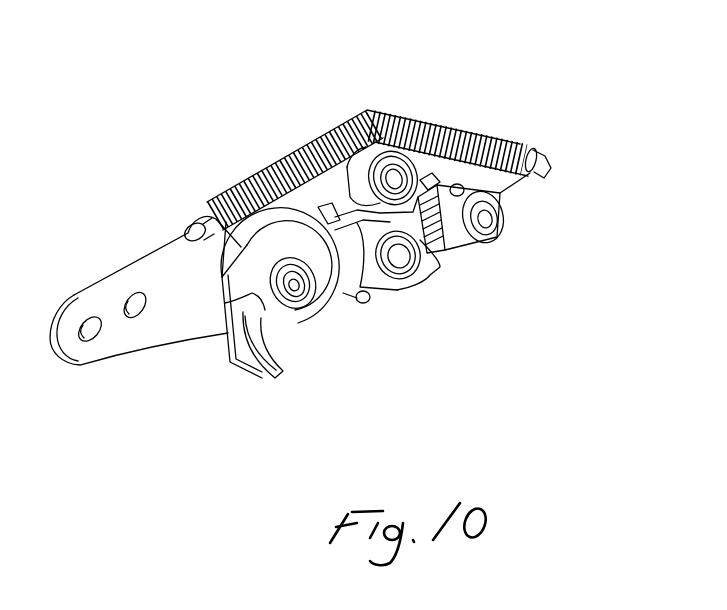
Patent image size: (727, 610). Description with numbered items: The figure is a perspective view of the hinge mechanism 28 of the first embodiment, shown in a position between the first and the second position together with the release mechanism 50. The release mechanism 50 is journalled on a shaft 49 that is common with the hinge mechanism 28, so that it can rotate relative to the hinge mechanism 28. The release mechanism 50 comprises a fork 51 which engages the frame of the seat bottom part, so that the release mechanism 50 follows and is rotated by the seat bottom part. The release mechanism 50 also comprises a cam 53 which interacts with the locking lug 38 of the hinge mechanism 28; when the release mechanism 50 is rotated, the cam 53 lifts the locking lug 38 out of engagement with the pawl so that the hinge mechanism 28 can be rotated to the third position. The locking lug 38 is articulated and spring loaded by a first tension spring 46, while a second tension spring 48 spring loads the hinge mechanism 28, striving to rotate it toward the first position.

The hinge mechanism 28 is at (91, 283).
The cam 53 is at (182, 265).
The fork 51 is at (235, 366).
The release mechanism 50 is at (287, 371).
The common shaft 49 is at (296, 288).
The locking lug 38 is at (383, 290).
The first tension spring 46 is at (447, 252).
The second tension spring 48 is at (434, 116).